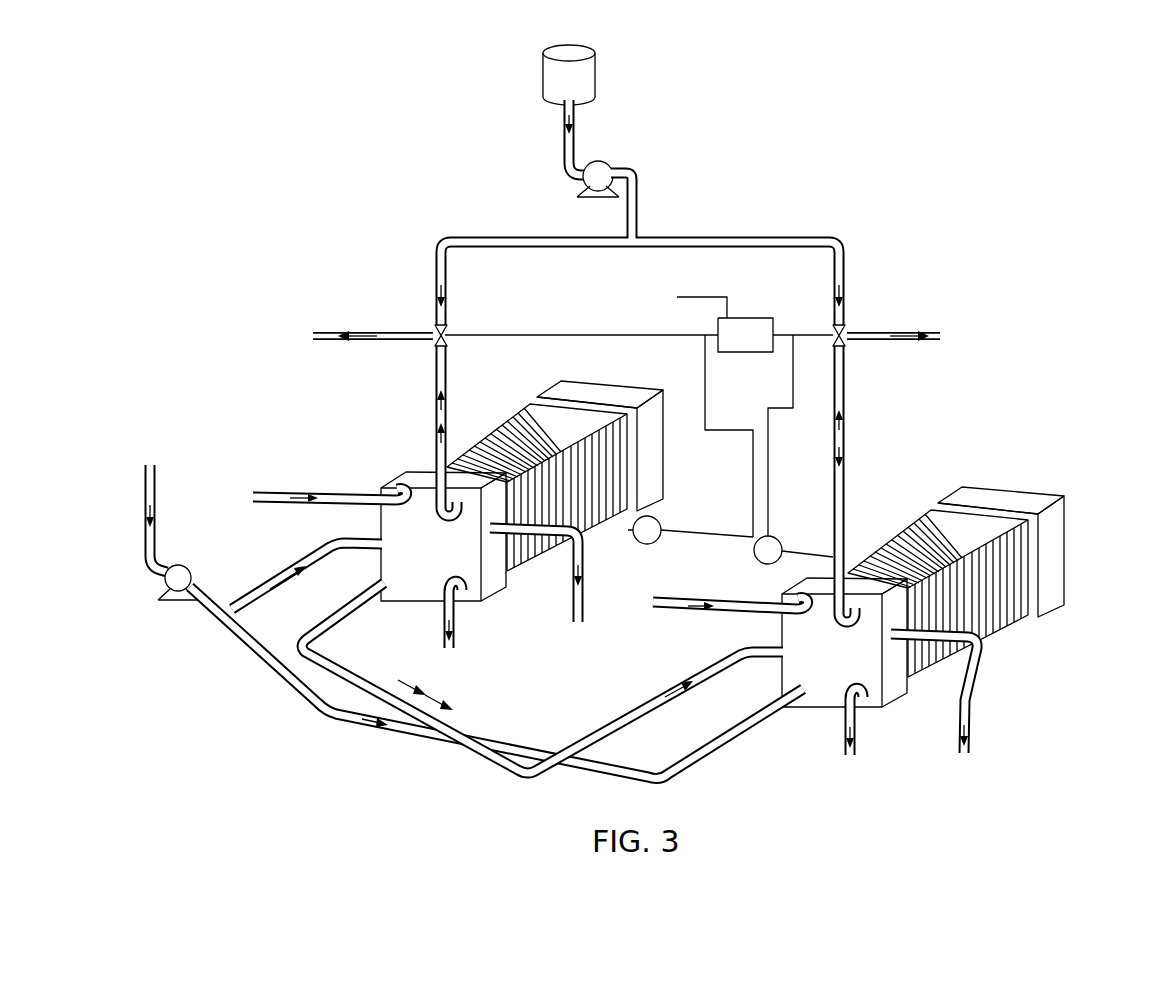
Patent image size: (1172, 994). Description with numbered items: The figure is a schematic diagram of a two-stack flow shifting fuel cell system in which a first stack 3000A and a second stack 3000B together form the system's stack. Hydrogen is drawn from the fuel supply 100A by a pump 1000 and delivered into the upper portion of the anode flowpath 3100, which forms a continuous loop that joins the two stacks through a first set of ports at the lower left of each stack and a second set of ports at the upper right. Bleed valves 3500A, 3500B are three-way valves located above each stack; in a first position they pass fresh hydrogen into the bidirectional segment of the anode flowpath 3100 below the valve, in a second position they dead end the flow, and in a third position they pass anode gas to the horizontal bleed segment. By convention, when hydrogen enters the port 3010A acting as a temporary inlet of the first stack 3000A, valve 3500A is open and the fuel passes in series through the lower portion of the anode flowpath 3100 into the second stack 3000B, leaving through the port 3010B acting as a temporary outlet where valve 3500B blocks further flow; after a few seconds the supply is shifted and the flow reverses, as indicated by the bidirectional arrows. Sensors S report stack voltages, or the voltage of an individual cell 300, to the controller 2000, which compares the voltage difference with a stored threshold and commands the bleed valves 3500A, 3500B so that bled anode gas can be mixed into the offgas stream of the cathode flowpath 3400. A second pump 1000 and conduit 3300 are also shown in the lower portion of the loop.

The fuel supply 100A is at (545, 78).
The pump 1000 is at (600, 162).
The controller 2000 is at (760, 318).
The individual cell 300 is at (503, 428).
The first stack 3000A is at (562, 491).
The second stack 3000B is at (963, 597).
The port 3010A is at (457, 516).
The port 3010B is at (857, 624).
The anode flowpath 3100 is at (738, 238).
The return pipe 3300 is at (590, 591).
The cathode flowpath 3400 is at (313, 490).
The bleed valve 3500A is at (450, 330).
The bleed valve 3500B is at (855, 330).